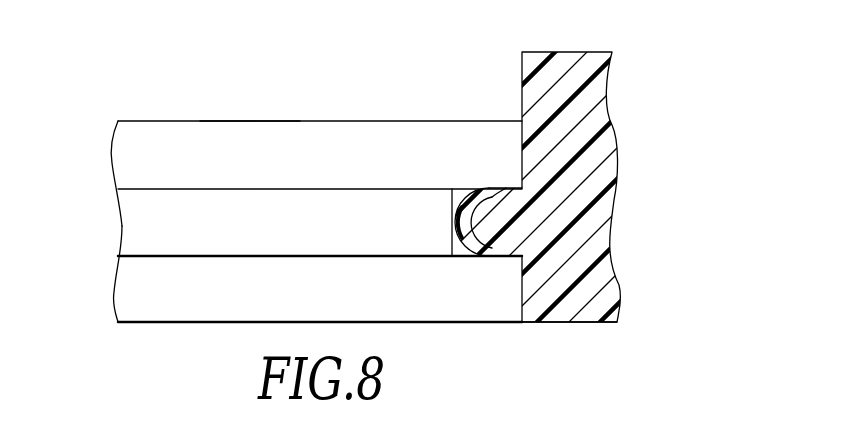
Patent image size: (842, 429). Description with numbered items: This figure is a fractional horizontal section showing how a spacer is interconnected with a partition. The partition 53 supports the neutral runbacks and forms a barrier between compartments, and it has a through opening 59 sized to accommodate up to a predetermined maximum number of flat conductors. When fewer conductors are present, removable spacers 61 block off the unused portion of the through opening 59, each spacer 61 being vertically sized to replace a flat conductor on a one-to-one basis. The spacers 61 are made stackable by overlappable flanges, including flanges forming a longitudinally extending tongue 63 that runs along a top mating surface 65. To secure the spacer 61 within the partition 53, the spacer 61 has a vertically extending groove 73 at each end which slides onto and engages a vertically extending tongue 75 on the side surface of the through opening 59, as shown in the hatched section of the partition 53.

The partition 53 is at (561, 308).
The through opening 59 is at (521, 74).
The spacer 61 is at (150, 121).
The longitudinally extending tongue 63 is at (135, 225).
The top mating surface 65 is at (222, 140).
The vertically extending groove 73 is at (497, 188).
The vertically extending tongue 75 is at (508, 240).